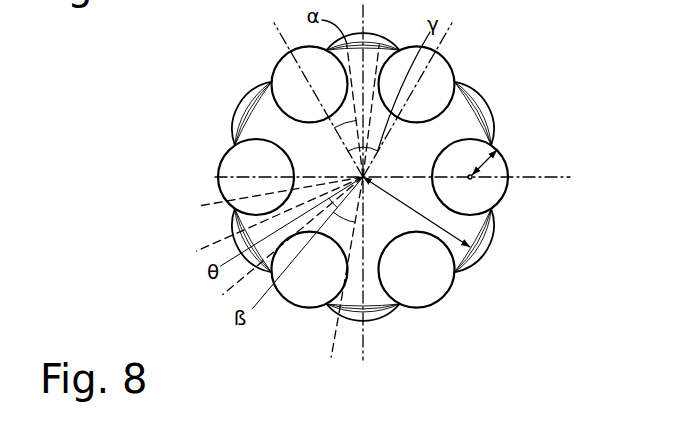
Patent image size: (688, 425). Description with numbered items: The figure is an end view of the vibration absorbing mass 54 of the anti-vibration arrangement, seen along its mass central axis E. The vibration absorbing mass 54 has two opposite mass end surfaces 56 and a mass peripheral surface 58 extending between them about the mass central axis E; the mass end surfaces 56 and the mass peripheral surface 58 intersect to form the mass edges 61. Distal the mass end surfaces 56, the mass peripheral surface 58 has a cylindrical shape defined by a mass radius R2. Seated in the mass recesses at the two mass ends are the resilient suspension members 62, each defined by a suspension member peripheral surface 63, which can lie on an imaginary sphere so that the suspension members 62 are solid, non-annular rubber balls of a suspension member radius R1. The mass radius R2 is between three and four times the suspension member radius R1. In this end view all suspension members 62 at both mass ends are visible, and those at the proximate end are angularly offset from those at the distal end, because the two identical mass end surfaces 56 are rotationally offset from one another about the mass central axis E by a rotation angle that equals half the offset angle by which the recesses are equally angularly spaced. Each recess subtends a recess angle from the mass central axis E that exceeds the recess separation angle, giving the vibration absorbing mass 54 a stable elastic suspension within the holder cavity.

The vibration absorbing mass 54 is at (353, 204).
The mass end surfaces 56 is at (240, 116).
The mass peripheral surface 58 is at (462, 271).
The mass edges 61 is at (236, 124).
The suspension members 62 is at (283, 85).
The suspension member peripheral surface 63 is at (243, 222).
The mass central axis E is at (481, 106).
The suspension member radius R1 is at (497, 172).
The mass radius R2 is at (447, 232).